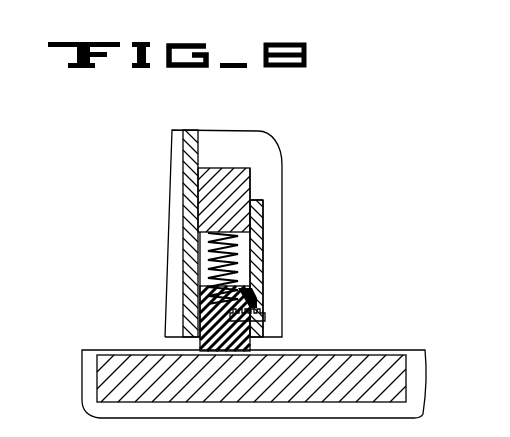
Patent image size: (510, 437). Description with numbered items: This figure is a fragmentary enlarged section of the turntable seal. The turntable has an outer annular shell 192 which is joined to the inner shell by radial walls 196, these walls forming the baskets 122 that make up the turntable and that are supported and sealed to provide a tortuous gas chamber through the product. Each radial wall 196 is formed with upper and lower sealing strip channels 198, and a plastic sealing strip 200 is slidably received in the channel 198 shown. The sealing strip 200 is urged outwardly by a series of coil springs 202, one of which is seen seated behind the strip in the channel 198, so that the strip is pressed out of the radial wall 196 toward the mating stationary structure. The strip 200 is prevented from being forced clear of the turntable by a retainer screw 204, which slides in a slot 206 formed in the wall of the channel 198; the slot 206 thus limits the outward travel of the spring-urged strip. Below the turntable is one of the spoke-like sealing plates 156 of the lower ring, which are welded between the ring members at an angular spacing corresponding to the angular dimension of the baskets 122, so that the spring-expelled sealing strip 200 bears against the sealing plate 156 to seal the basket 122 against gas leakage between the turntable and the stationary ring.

The basket 122 is at (158, 229).
The spoke-like sealing plate 156 is at (357, 355).
The outer annular shell 192 is at (172, 207).
The radial wall 196 is at (187, 170).
The sealing strip channel 198 is at (252, 221).
The plastic sealing strip 200 is at (202, 316).
The coil spring 202 is at (200, 265).
The retainer screw 204 is at (276, 318).
The slot 206 is at (260, 298).